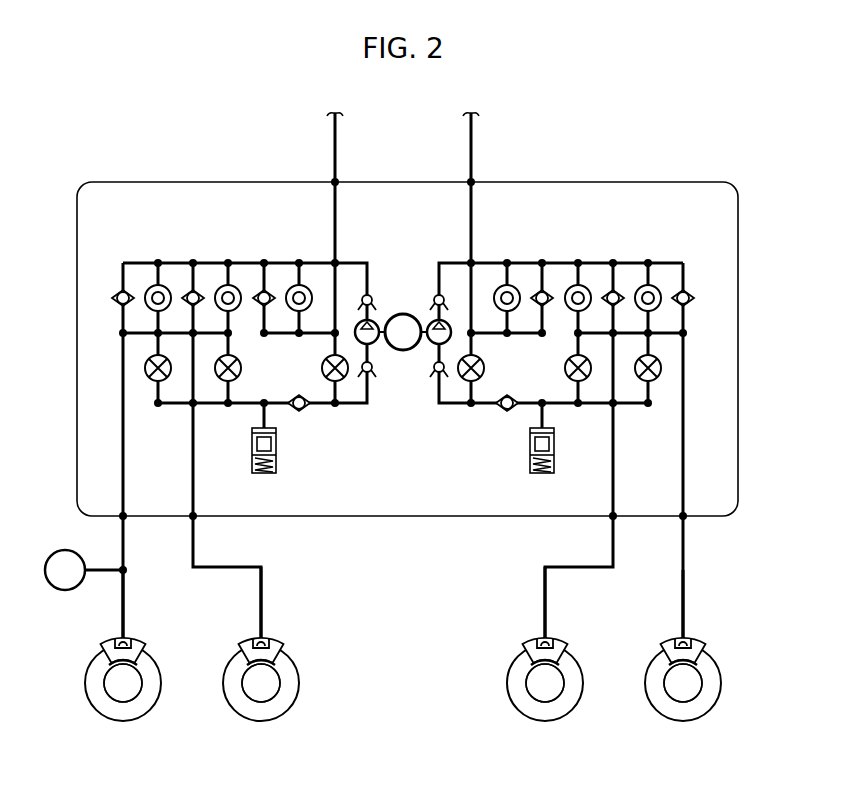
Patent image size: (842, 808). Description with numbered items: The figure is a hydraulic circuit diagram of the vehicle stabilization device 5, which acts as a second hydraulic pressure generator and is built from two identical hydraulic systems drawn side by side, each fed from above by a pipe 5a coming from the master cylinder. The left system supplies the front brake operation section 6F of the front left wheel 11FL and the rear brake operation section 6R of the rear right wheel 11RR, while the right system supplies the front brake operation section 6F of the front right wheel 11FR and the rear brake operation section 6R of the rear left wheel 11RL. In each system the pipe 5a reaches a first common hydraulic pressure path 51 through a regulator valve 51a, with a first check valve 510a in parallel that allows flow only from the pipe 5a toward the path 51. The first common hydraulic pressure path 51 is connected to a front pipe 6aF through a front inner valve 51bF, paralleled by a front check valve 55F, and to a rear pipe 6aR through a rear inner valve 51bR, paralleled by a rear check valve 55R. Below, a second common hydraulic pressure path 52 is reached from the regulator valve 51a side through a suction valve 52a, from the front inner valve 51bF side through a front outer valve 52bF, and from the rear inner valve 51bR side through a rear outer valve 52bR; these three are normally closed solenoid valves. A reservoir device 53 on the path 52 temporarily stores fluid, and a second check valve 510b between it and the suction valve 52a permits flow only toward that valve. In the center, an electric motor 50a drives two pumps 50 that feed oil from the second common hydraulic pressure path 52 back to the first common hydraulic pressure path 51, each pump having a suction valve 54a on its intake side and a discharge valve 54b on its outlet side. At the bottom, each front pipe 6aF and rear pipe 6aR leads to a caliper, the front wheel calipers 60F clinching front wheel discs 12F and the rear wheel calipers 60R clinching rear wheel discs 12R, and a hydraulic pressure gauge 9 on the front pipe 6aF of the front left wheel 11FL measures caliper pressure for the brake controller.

The vehicle stabilization device 5 is at (586, 181).
The pipe 5a is at (336, 153).
The front pipe 6aF is at (125, 587).
The rear pipe 6aR is at (263, 587).
The front brake operation section 6F is at (142, 633).
The rear brake operation section 6R is at (280, 633).
The hydraulic pressure gauge 9 is at (63, 592).
The front left wheel 11FL is at (92, 720).
The rear right wheel 11RR is at (230, 720).
The front right wheel 11FR is at (514, 720).
The rear left wheel 11RL is at (654, 720).
The front wheel disc 12F is at (125, 722).
The rear wheel disc 12R is at (263, 722).
The pump 50 is at (428, 344).
The electric motor 50a is at (403, 313).
The first common hydraulic pressure path 51 is at (200, 275).
The regulator valve 51a is at (300, 285).
The front inner valve 51bF is at (150, 285).
The rear inner valve 51bR is at (228, 285).
The first check valve 510a is at (265, 288).
The second check valve 510b is at (302, 411).
The second common hydraulic pressure path 52 is at (207, 406).
The suction valve 52a is at (322, 360).
The front outer valve 52bF is at (156, 383).
The rear outer valve 52bR is at (243, 363).
The reservoir device 53 is at (278, 460).
The suction valve 54a is at (436, 378).
The discharge valve 54b is at (438, 282).
The front check valve 55F is at (118, 289).
The rear check valve 55R is at (189, 289).
The front wheel caliper 60F is at (98, 660).
The rear wheel caliper 60R is at (234, 660).